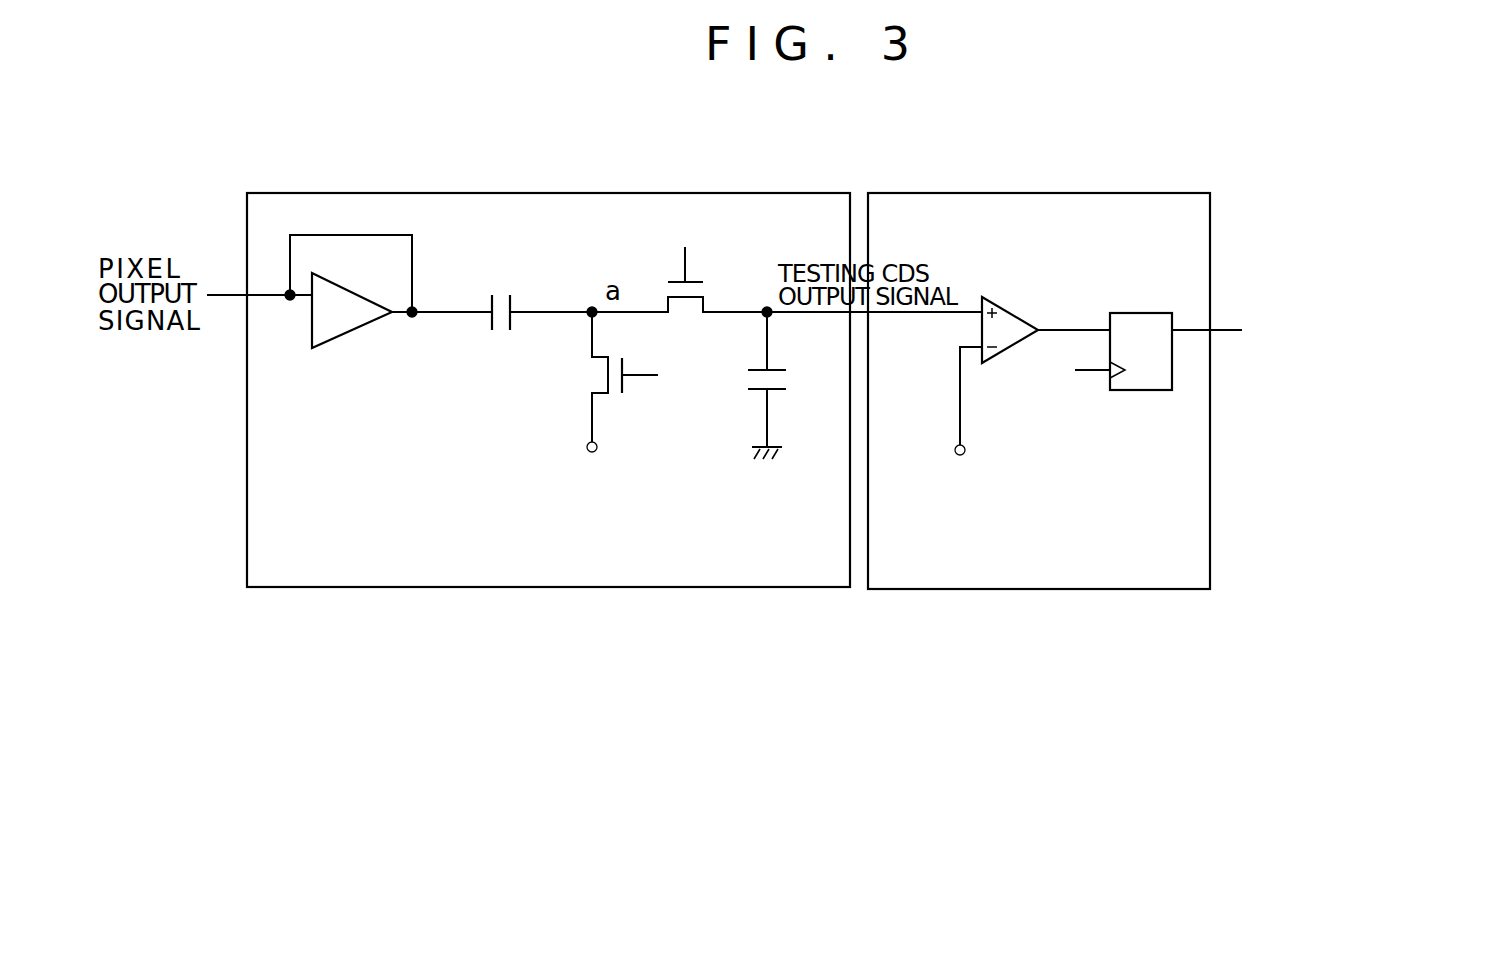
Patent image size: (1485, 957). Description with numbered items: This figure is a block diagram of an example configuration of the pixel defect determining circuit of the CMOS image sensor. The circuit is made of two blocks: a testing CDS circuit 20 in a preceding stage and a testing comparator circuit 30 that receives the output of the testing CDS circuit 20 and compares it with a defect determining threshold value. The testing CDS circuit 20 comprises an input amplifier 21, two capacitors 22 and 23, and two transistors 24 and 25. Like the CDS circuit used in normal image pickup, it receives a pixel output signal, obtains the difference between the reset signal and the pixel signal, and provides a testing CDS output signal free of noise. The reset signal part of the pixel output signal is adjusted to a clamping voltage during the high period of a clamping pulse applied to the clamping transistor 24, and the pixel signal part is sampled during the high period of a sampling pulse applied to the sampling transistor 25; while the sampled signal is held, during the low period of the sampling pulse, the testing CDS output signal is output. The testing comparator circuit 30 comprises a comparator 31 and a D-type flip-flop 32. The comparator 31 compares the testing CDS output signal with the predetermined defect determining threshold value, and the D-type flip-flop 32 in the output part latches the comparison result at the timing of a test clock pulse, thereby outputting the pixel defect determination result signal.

The testing CDS circuit 20 is at (732, 193).
The input amplifier 21 is at (347, 335).
The capacitor 22 is at (512, 298).
The capacitor 23 is at (775, 392).
The clamping transistor 24 is at (625, 367).
The sampling transistor 25 is at (697, 283).
The testing comparator circuit 30 is at (1112, 193).
The comparator 31 is at (1008, 300).
The D-type flip-flop 32 is at (1138, 313).